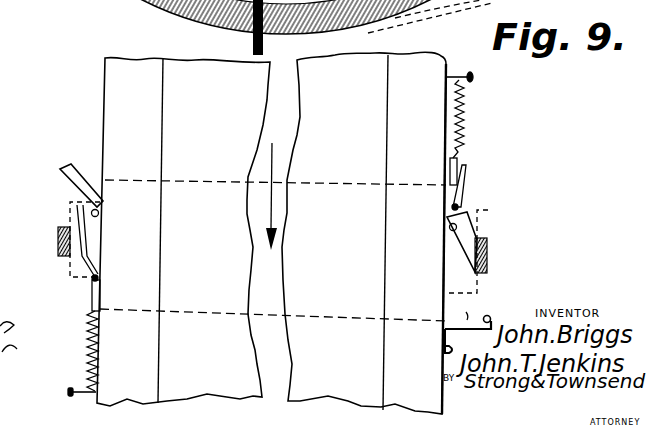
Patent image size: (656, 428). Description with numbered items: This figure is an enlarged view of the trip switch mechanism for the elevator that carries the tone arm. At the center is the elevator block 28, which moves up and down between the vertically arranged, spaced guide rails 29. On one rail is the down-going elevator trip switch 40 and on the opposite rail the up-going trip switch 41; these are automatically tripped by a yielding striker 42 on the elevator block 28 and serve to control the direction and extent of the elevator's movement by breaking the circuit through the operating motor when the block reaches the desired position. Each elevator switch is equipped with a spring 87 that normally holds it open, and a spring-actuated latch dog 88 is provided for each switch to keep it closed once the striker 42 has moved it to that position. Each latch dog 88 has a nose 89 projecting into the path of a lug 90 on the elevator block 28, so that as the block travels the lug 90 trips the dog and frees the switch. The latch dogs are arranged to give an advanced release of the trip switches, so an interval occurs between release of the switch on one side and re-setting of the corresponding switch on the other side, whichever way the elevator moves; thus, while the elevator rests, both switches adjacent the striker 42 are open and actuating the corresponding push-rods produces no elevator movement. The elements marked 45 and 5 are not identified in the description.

The wheel rim 45 is at (301, 27).
The guide rails 29 is at (271, 233).
The elevator block 28 is at (273, 232).
The nose 89 is at (62, 170).
The latch dog 88 is at (85, 253).
The lug 90 is at (488, 246).
The yielding striker 42 is at (93, 280).
The down-going elevator trip switch 40 is at (90, 303).
The up-going trip switch 41 is at (463, 170).
The spring 87 is at (85, 352).
The bracket 5 is at (489, 316).